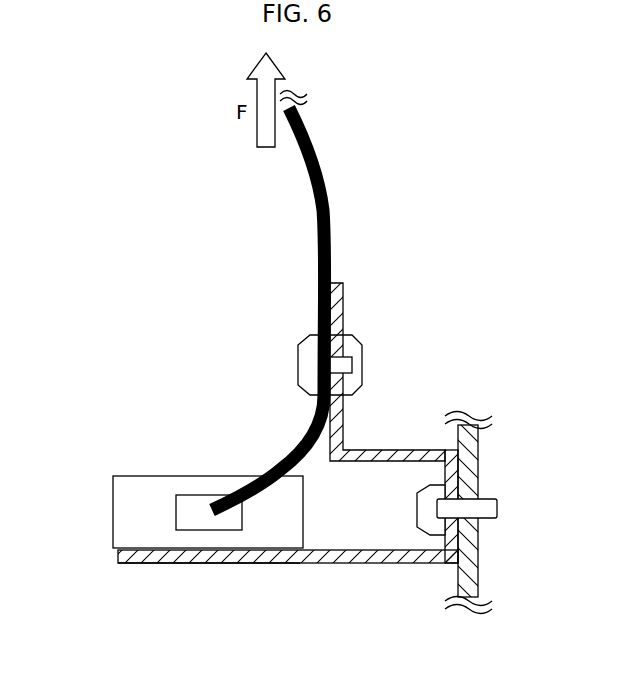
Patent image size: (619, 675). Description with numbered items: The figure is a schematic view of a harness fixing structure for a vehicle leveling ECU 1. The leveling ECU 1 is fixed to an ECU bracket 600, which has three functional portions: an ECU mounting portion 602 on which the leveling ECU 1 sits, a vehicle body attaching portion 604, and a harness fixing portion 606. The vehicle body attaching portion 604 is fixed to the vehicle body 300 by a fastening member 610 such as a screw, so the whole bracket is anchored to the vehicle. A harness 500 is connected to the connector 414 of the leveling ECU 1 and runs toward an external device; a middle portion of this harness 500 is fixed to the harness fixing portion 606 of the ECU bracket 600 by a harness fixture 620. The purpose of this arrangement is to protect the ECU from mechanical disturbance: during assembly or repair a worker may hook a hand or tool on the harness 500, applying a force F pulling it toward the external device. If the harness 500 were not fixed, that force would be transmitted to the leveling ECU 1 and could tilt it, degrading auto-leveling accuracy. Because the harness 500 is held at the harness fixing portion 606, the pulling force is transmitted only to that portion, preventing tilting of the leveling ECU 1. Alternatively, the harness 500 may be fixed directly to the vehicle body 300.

The leveling ECU 1 is at (111, 503).
The vehicle body 300 is at (478, 563).
The connector 414 is at (175, 514).
The harness 500 is at (319, 143).
The ECU bracket 600 is at (335, 563).
The ECU mounting portion 602 is at (131, 563).
The vehicle body attaching portion 604 is at (440, 543).
The harness fixing portion 606 is at (343, 305).
The fastening member 610 is at (480, 493).
The harness fixture 620 is at (362, 360).